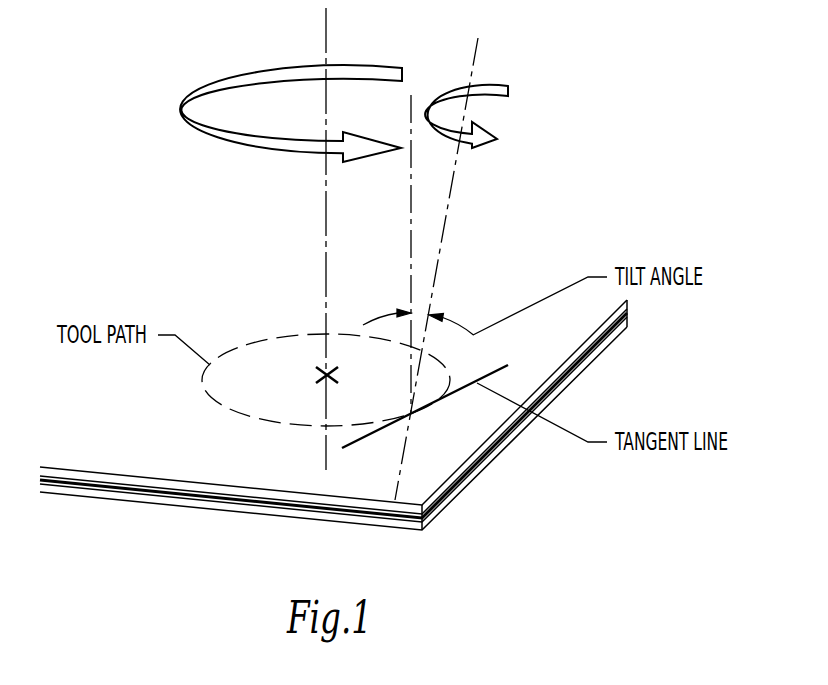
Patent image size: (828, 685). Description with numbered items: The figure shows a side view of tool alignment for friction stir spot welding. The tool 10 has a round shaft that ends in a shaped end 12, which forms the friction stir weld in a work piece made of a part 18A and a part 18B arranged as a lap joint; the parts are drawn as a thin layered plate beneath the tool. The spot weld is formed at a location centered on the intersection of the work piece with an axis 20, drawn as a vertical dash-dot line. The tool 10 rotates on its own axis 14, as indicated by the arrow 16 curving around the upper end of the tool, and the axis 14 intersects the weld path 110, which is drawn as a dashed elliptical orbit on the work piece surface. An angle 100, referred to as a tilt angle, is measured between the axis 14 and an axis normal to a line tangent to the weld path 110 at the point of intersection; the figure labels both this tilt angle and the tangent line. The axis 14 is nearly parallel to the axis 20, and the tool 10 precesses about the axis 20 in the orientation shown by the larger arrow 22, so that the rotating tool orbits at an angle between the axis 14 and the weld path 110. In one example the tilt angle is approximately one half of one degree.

The tool 10 is at (470, 241).
The shaped end 12 is at (425, 428).
The axis 14 is at (436, 279).
The arrow 16 is at (484, 128).
The part 18A is at (448, 483).
The part 18B is at (428, 517).
The axis 20 is at (326, 238).
The arrow 22 is at (372, 155).
The angle 100 is at (473, 336).
The weld path 110 is at (202, 378).